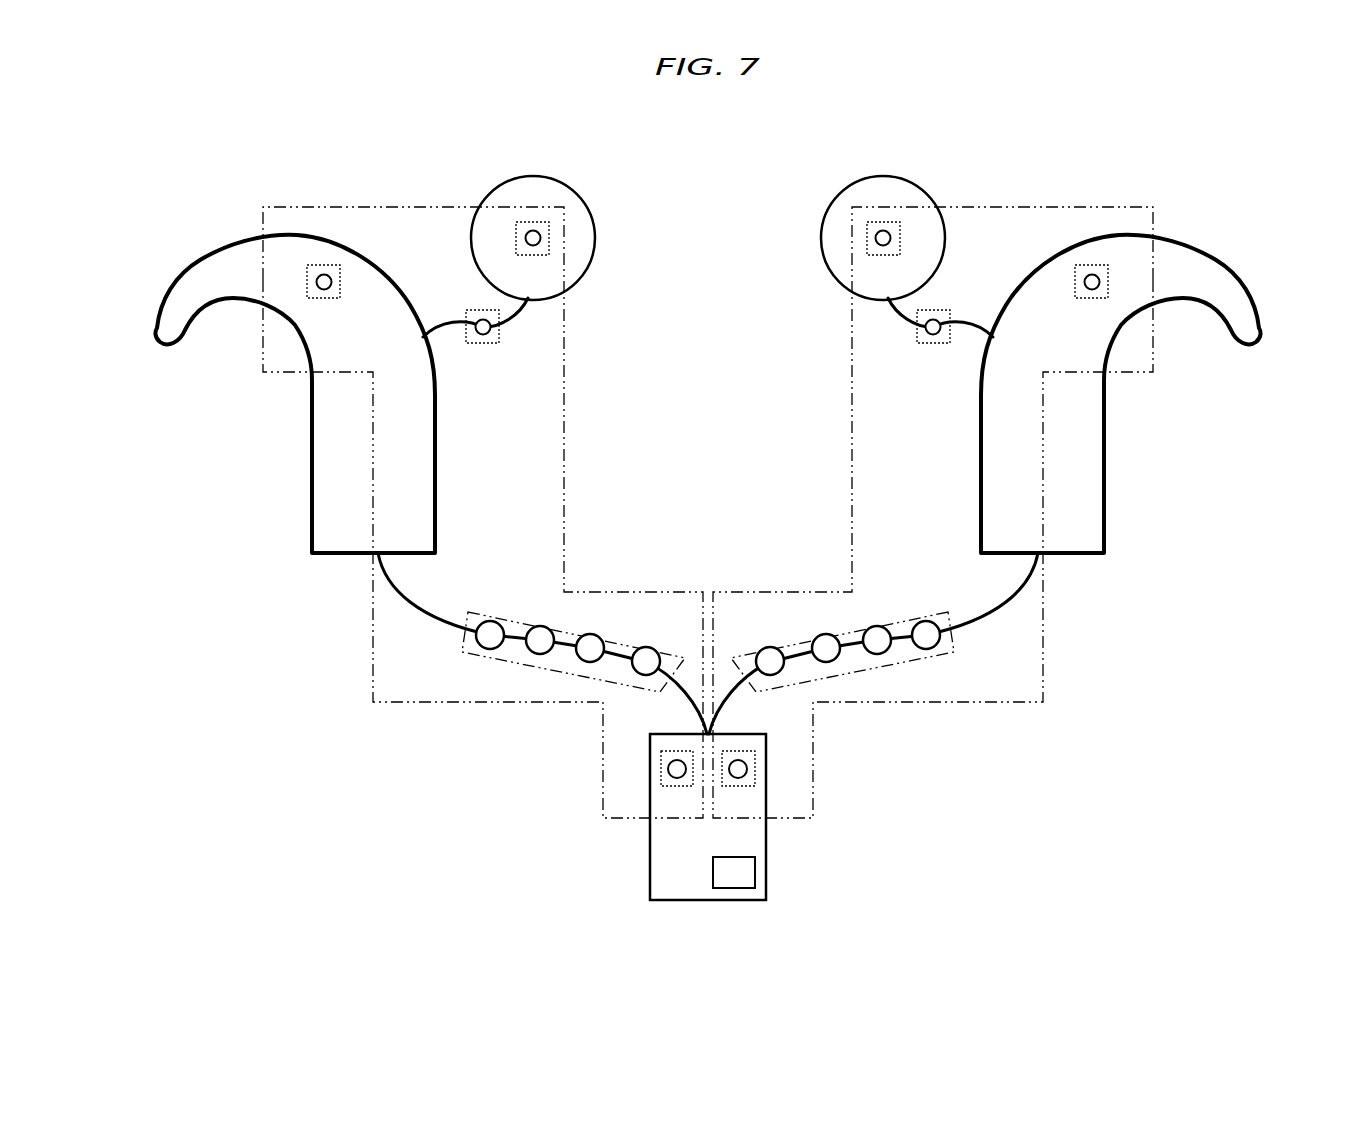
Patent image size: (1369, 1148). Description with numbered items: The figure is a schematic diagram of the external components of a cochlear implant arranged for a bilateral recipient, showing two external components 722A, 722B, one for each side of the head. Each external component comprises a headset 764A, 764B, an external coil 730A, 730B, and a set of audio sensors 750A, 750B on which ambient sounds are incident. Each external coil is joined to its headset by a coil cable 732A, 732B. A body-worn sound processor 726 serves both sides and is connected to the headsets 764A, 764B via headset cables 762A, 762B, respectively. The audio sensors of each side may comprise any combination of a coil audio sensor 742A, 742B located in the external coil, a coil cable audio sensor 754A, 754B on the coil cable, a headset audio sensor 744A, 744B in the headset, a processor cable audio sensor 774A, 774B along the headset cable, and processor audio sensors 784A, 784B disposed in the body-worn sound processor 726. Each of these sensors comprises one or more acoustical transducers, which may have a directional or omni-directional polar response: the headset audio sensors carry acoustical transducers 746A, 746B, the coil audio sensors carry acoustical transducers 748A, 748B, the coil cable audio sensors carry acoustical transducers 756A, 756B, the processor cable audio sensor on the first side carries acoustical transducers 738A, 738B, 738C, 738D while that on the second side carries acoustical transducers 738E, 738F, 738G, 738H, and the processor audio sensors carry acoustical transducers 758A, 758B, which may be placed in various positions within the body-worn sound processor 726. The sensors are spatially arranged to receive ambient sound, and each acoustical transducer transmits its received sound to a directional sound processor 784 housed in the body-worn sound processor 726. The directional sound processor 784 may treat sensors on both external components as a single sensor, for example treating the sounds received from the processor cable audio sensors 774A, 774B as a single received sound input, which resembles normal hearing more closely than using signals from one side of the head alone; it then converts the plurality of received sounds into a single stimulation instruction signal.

The external component 722A is at (373, 439).
The external component 722B is at (1037, 439).
The body-worn sound processor 726 is at (716, 831).
The external coil 730A is at (528, 187).
The external coil 730B is at (881, 181).
The coil cable 732A is at (509, 299).
The coil cable 732B is at (908, 320).
The acoustical transducer 738A is at (490, 621).
The acoustical transducer 738B is at (540, 626).
The acoustical transducer 738C is at (590, 634).
The acoustical transducer 738D is at (646, 647).
The acoustical transducer 738E is at (768, 647).
The acoustical transducer 738F is at (825, 634).
The acoustical transducer 738G is at (878, 626).
The acoustical transducer 738H is at (928, 621).
The coil audio sensor 742A is at (616, 229).
The coil audio sensor 742B is at (792, 189).
The headset audio sensor 744A is at (191, 225).
The headset audio sensor 744B is at (1219, 213).
The acoustical transducer 746A is at (317, 278).
The acoustical transducer 746B is at (1100, 280).
The acoustical transducer 748A is at (538, 232).
The acoustical transducer 748B is at (878, 235).
The audio sensors 750A is at (262, 350).
The audio sensors 750B is at (1153, 348).
The coil cable audio sensor 754A is at (509, 299).
The coil cable audio sensor 754B is at (908, 320).
The acoustical transducer 756A is at (478, 322).
The acoustical transducer 756B is at (938, 322).
The acoustical transducer 758A is at (677, 769).
The acoustical transducer 758B is at (738, 769).
The headset cable 762A is at (405, 603).
The headset cable 762B is at (1007, 605).
The headset 764A is at (312, 475).
The headset 764B is at (1106, 473).
The processor cable audio sensor 774A is at (496, 645).
The processor cable audio sensor 774B is at (934, 674).
The directional sound processor 784 is at (713, 872).
The processor audio sensor 784A is at (525, 782).
The processor audio sensor 784B is at (898, 799).